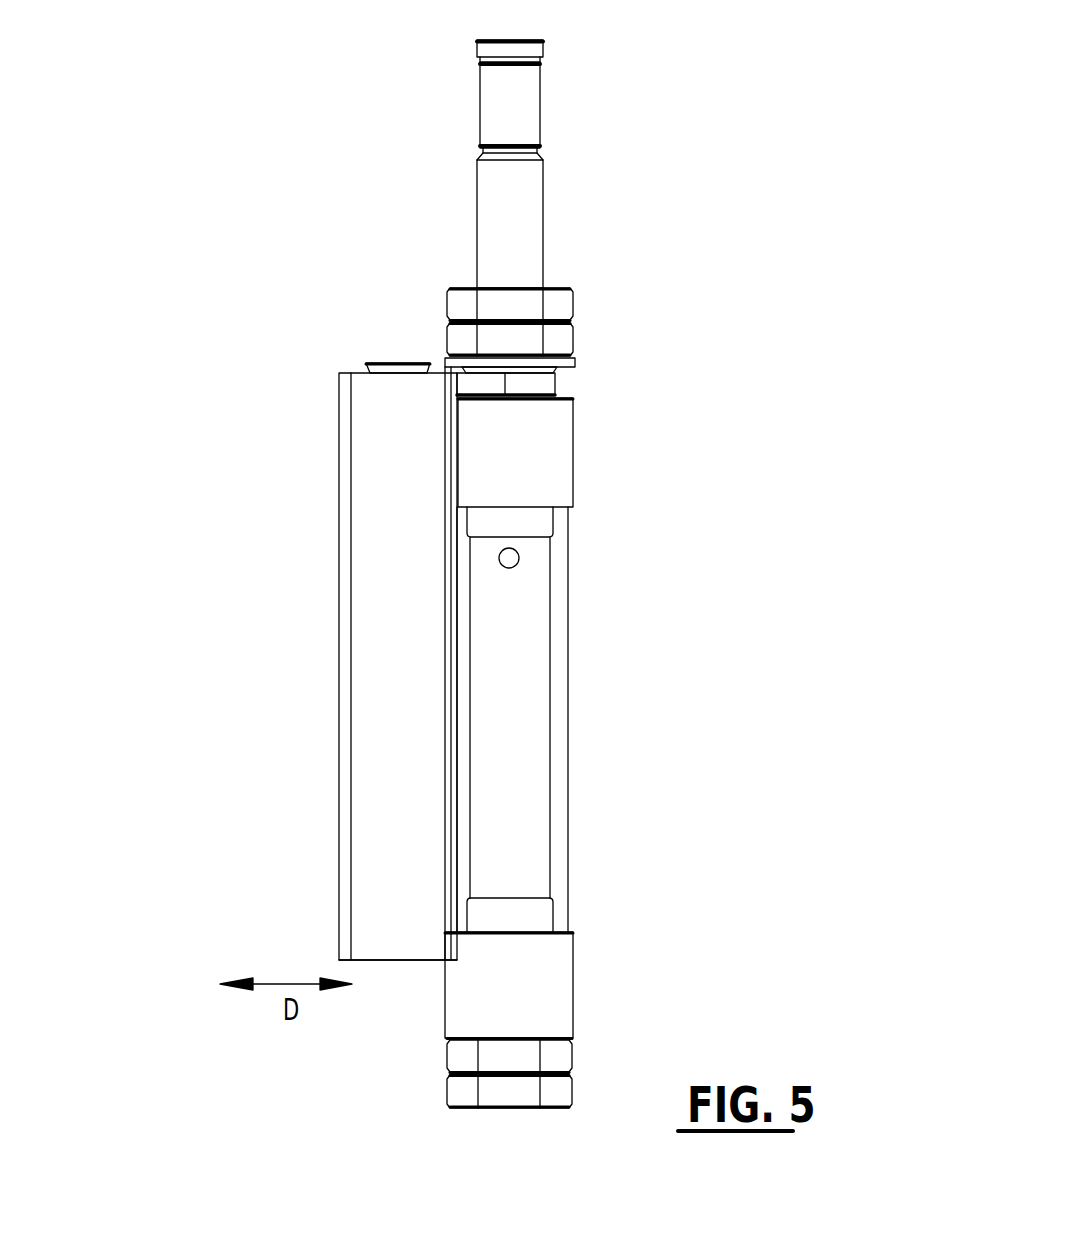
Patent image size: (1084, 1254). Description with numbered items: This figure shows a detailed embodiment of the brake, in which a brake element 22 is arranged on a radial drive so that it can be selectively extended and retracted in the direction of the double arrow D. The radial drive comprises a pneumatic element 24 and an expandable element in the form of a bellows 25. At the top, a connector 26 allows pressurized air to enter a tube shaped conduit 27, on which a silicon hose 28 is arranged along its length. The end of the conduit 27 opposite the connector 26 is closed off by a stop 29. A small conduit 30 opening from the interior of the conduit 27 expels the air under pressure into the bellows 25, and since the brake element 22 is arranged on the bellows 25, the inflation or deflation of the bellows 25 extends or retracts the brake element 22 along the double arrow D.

The brake element 22 is at (348, 308).
The pneumatic element 24 is at (606, 503).
The bellows 25 is at (400, 937).
The connector 26 is at (523, 93).
The tube shaped conduit 27 is at (526, 231).
The silicon hose 28 is at (567, 727).
The stop 29 is at (626, 1044).
The conduit 30 is at (512, 565).